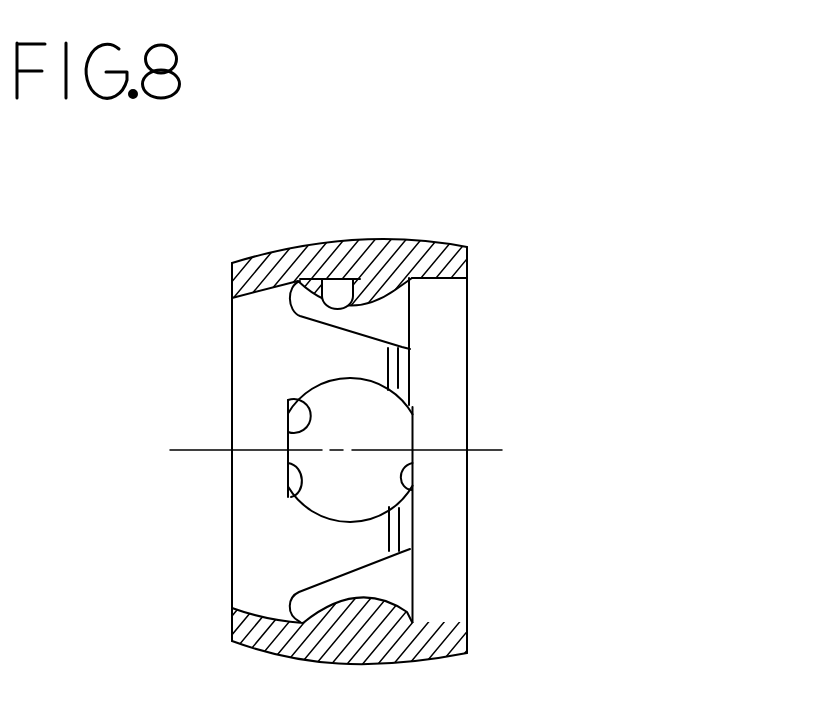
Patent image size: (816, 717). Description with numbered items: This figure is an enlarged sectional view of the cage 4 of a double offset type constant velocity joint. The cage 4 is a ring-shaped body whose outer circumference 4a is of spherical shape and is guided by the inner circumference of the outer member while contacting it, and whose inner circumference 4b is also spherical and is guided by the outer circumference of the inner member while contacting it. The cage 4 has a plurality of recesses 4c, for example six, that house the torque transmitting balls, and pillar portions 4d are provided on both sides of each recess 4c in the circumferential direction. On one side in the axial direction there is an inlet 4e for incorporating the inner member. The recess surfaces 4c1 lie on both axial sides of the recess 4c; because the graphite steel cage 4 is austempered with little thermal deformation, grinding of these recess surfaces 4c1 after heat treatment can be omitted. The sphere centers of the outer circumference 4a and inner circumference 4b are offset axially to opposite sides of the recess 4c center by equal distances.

The cage 4 is at (230, 229).
The outer circumference 4a is at (385, 240).
The inner circumference 4b is at (324, 295).
The recess 4c is at (288, 429).
The recess surfaces 4c1 is at (291, 496).
The pillar portions 4d is at (338, 355).
The inlet 4e is at (433, 278).